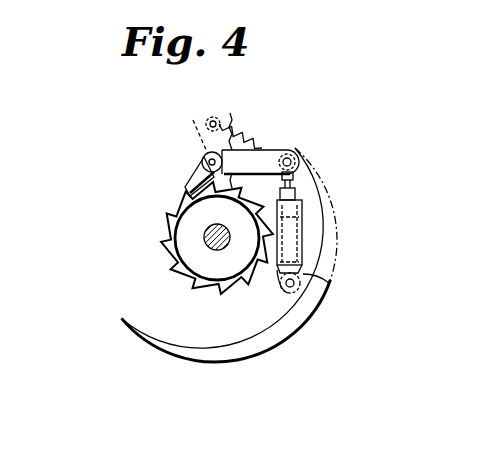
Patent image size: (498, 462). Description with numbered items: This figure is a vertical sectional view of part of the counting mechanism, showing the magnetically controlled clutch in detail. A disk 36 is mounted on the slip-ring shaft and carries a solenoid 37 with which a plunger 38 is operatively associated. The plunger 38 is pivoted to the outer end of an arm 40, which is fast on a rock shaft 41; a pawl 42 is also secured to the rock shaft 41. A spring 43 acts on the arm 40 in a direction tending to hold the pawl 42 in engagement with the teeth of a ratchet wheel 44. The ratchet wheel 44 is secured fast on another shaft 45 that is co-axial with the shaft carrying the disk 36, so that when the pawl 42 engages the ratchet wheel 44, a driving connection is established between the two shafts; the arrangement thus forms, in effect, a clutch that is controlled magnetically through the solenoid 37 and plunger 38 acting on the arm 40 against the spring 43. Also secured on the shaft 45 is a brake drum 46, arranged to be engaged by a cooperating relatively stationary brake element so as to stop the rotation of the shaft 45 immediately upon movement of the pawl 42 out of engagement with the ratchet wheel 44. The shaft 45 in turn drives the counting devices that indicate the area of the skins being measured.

The disk 36 is at (144, 149).
The solenoid 37 is at (302, 240).
The plunger 38 is at (297, 192).
The arm 40 is at (279, 147).
The rock shaft 41 is at (194, 118).
The pawl 42 is at (190, 178).
The spring 43 is at (236, 118).
The ratchet wheel 44 is at (181, 275).
The shaft 45 is at (217, 244).
The brake drum 46 is at (233, 290).